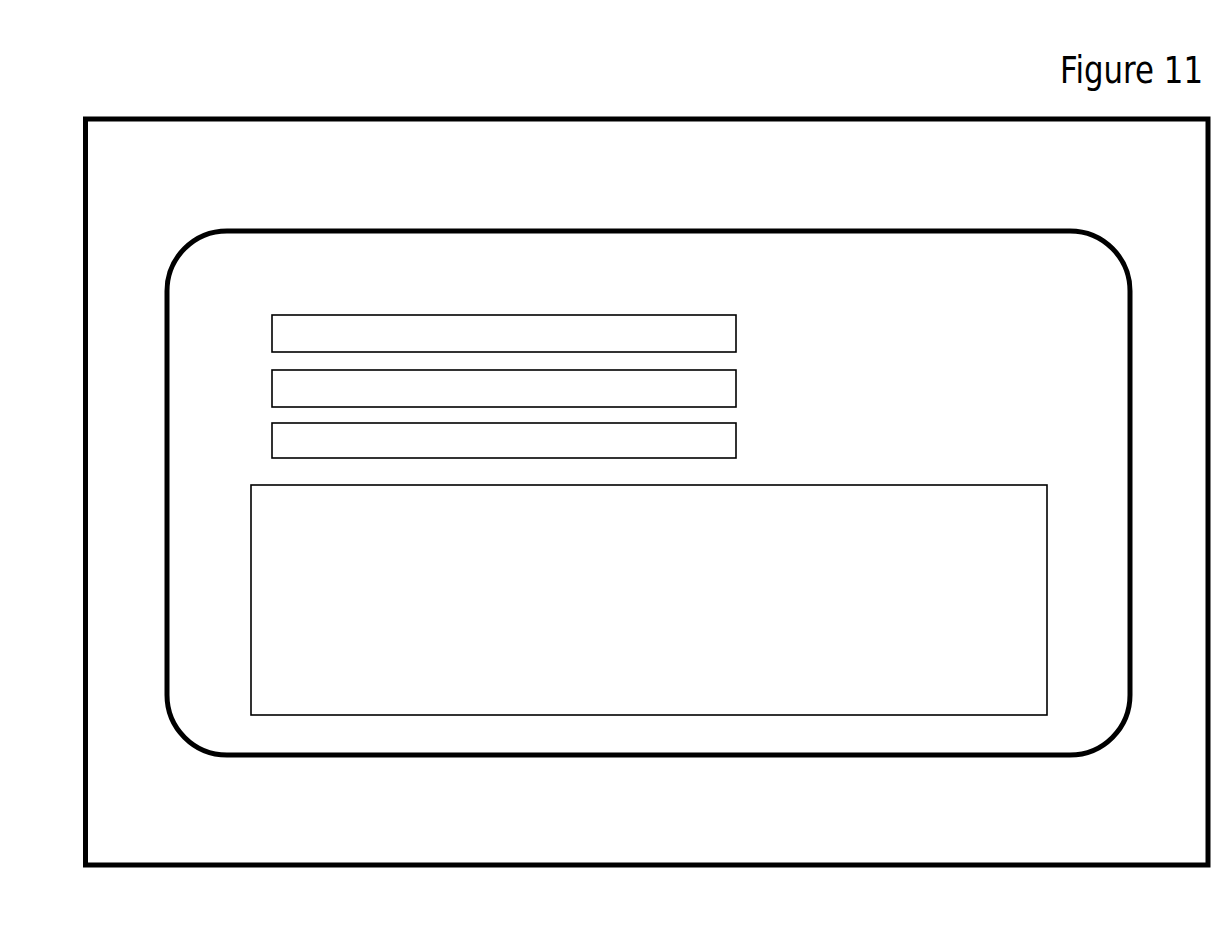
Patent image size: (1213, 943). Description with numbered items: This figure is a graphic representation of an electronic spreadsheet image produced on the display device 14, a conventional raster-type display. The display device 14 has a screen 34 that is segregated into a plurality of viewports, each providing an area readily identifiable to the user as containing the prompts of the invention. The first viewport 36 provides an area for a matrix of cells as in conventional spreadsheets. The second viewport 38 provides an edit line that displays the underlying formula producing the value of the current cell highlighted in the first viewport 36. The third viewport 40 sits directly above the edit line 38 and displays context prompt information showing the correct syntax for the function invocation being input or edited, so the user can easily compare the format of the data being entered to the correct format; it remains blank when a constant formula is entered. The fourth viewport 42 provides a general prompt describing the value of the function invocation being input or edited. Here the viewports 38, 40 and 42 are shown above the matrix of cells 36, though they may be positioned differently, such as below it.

The display device 14 is at (230, 114).
The screen 34 is at (1056, 746).
The first viewport 36 is at (915, 493).
The second viewport 38 is at (732, 443).
The third viewport 40 is at (732, 393).
The fourth viewport 42 is at (732, 338).